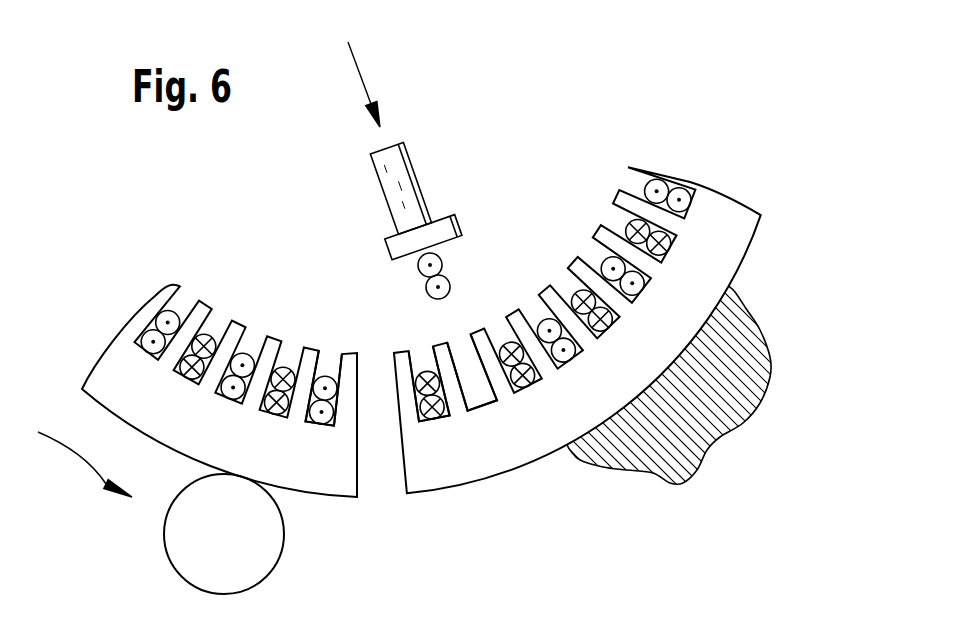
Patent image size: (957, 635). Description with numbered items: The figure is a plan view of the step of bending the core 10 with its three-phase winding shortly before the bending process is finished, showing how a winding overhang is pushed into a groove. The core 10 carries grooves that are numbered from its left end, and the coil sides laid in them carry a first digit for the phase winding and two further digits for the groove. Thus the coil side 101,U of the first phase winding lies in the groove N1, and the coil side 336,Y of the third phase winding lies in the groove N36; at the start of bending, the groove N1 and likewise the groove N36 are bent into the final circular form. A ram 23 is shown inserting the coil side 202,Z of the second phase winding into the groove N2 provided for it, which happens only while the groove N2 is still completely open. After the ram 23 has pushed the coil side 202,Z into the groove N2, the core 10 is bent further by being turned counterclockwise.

The core 10 is at (708, 255).
The ram 23 is at (398, 188).
The coil side 202,Z is at (447, 263).
The groove N1 is at (447, 412).
The groove N2 is at (462, 350).
The groove N36 is at (334, 412).
The coil side 336,Y is at (325, 423).
The coil side 101,U is at (435, 423).